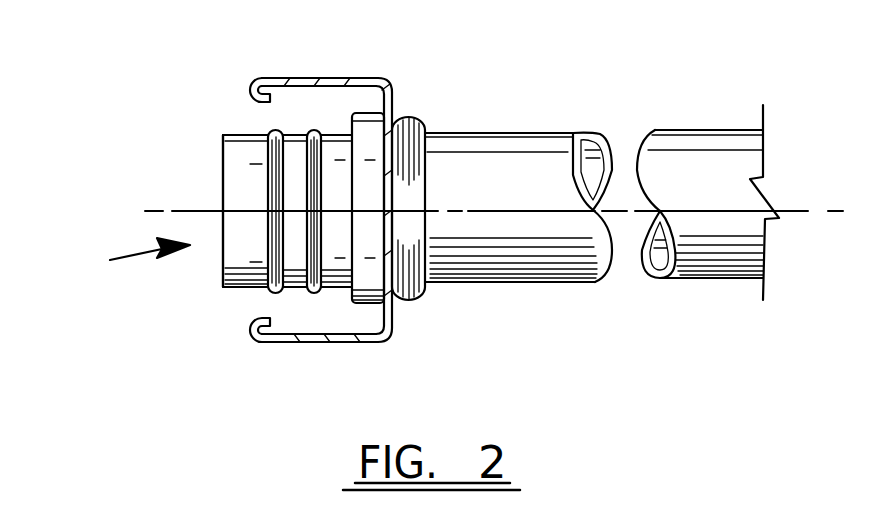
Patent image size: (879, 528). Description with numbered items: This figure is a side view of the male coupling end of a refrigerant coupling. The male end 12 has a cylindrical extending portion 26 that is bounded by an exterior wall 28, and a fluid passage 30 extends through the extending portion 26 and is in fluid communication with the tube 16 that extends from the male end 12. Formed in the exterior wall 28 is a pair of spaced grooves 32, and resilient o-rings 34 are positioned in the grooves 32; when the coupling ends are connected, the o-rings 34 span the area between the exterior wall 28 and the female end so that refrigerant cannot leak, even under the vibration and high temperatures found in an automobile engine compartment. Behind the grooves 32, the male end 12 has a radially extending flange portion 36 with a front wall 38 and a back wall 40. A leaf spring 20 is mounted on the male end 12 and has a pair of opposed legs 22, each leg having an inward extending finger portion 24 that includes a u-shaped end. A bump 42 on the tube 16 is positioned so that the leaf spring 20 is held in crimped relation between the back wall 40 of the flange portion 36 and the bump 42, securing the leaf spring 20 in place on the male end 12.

The male end 12 is at (228, 288).
The tube 16 is at (537, 285).
The leaf spring 20 is at (328, 214).
The legs 22 is at (282, 75).
The finger portions 24 is at (256, 82).
The cylindrical extending portion 26 is at (228, 178).
The exterior wall 28 is at (243, 133).
The fluid passage 30 is at (121, 262).
The spaced grooves 32 is at (265, 295).
The o-rings 34 is at (313, 300).
The flange portion 36 is at (376, 318).
The front wall 38 is at (350, 303).
The back wall 40 is at (410, 283).
The bump 42 is at (425, 125).